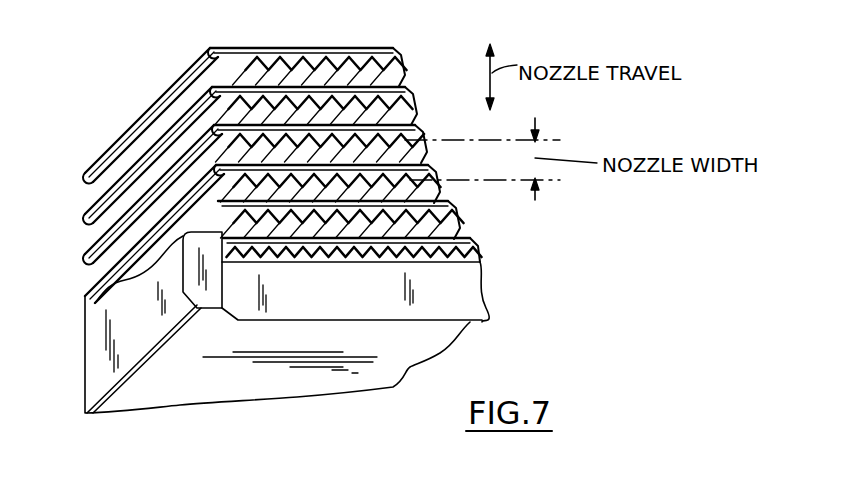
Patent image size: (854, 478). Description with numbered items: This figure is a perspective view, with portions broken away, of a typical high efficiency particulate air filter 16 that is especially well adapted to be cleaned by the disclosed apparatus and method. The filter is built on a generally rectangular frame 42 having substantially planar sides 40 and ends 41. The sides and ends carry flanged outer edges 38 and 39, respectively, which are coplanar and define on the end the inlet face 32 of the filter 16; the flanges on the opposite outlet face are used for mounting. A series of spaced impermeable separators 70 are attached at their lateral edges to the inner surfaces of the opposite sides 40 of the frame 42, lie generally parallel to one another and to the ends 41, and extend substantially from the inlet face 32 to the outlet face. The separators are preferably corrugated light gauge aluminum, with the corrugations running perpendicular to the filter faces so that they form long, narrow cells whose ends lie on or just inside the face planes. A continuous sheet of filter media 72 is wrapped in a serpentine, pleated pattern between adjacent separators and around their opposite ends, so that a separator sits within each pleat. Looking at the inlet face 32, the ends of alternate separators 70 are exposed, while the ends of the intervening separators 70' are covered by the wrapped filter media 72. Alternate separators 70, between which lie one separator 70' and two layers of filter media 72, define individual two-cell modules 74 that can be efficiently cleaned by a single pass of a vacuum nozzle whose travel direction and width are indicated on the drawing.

The filter media 72 is at (233, 88).
The inlet face 32 is at (323, 86).
The high efficiency particulate air filter 16 is at (408, 86).
The two-cell module 74 is at (425, 210).
The separator 70 is at (374, 243).
The separator 70' is at (123, 176).
The flanged outer edge 39 is at (463, 308).
The side 40 is at (110, 369).
The flanged outer edge 38 is at (211, 297).
The end 41 is at (317, 366).
The frame 42 is at (130, 375).